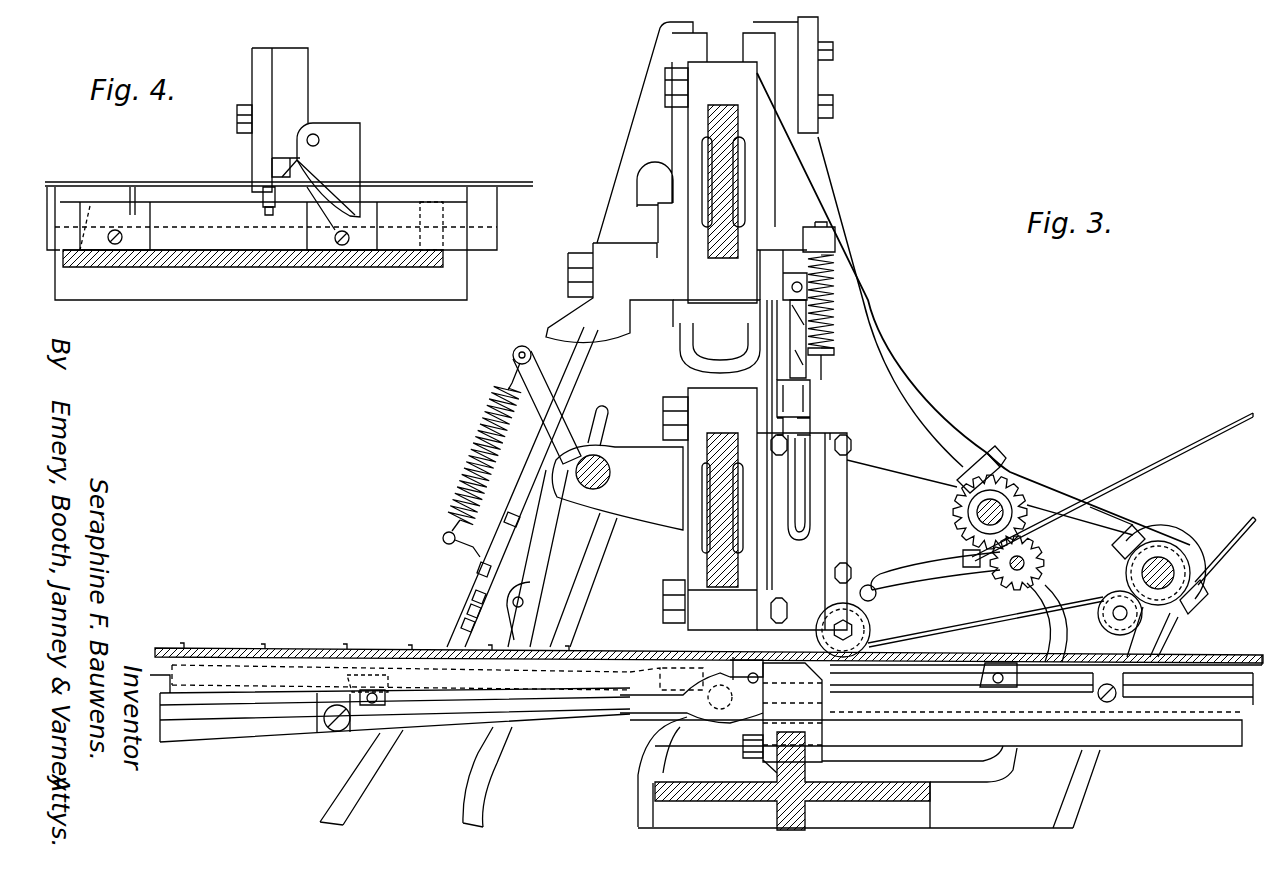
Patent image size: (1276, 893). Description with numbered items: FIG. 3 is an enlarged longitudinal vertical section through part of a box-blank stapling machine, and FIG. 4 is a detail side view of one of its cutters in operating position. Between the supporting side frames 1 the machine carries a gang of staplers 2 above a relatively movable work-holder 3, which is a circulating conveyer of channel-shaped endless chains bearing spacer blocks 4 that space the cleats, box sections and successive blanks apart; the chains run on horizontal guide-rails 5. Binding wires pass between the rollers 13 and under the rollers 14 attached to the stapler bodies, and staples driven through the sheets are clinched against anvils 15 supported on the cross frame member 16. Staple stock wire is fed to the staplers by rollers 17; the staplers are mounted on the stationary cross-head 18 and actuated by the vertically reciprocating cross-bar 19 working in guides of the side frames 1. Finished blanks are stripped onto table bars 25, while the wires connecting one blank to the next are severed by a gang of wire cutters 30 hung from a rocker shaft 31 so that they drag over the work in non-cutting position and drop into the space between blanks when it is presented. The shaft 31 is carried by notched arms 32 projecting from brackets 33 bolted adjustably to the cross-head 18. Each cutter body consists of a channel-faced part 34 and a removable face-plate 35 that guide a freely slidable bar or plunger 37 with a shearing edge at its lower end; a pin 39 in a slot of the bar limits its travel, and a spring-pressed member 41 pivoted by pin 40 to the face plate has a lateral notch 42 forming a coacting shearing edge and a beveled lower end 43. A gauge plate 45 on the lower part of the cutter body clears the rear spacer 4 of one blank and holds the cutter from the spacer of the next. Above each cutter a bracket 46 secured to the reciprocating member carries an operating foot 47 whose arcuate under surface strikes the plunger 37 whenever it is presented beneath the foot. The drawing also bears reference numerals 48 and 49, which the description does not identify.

In FIG. 3, the supporting side frames 1 is at (920, 410).
In FIG. 3, the staplers 2 is at (830, 502).
In FIG. 4, the work-holder 3 is at (417, 290).
In FIG. 3, the work-holder 3 is at (225, 730).
In FIG. 4, the spacer blocks 4 is at (140, 242).
In FIG. 3, the spacer blocks 4 is at (380, 703).
In FIG. 3, the horizontal guide-rails 5 is at (1183, 737).
In FIG. 3, the rollers 13 is at (1130, 620).
In FIG. 3, the rollers 14 is at (858, 627).
In FIG. 3, the anvils 15 is at (812, 730).
In FIG. 3, the cross frame member 16 is at (925, 798).
In FIG. 3, the feed rollers 17 is at (1040, 510).
In FIG. 3, the stationary cross-head 18 is at (723, 568).
In FIG. 3, the vertically reciprocating cross-bar 19 is at (725, 192).
In FIG. 3, the table bars 25 is at (200, 668).
In FIG. 4, the wire cutters 30 is at (286, 112).
In FIG. 3, the wire cutters 30 is at (522, 487).
In FIG. 3, the rocker shaft 31 is at (610, 458).
In FIG. 3, the notched arms 32 is at (617, 469).
In FIG. 3, the brackets 33 is at (707, 572).
In FIG. 4, the channel-faced part 34 is at (295, 90).
In FIG. 3, the channel-faced part 34 is at (526, 570).
In FIG. 4, the removable face-plate 35 is at (252, 62).
In FIG. 3, the removable face-plate 35 is at (512, 550).
In FIG. 4, the bar or plunger 37 is at (288, 180).
In FIG. 3, the bar or plunger 37 is at (603, 410).
In FIG. 3, the pin 39 is at (510, 513).
In FIG. 4, the pin 40 is at (237, 122).
In FIG. 3, the pin 40 is at (479, 570).
In FIG. 4, the spring-pressed member 41 is at (272, 165).
In FIG. 3, the spring-pressed member 41 is at (474, 597).
In FIG. 4, the lateral notch 42 is at (262, 200).
In FIG. 3, the lateral notch 42 is at (470, 609).
In FIG. 4, the beveled lower end 43 is at (270, 215).
In FIG. 3, the beveled lower end 43 is at (465, 620).
In FIG. 4, the gauge plate 45 is at (355, 140).
In FIG. 3, the gauge plate 45 is at (528, 618).
In FIG. 3, the bracket 46 is at (668, 210).
In FIG. 3, the operating foot 47 is at (562, 322).
In FIG. 3, the spring 48 is at (470, 470).
In FIG. 3, the pin 49 is at (512, 354).